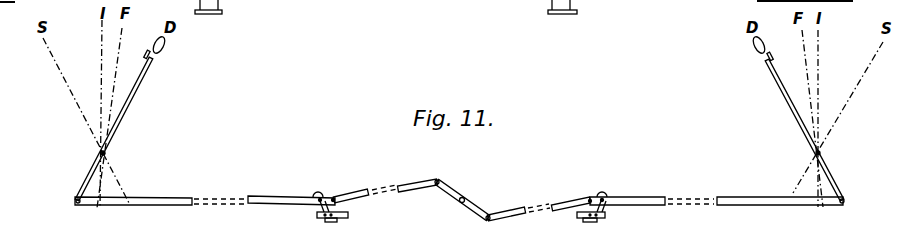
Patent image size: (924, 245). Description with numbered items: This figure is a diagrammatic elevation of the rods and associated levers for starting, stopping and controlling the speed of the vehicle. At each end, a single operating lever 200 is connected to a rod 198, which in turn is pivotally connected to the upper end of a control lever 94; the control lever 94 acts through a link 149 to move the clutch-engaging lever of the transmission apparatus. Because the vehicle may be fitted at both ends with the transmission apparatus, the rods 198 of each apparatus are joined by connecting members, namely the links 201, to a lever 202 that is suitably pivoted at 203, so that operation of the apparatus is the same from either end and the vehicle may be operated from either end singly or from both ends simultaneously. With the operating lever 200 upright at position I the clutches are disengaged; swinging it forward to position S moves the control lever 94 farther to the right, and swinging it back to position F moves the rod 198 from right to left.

The rod 198 is at (170, 188).
The operating lever 200 is at (786, 97).
The control lever 94 is at (319, 192).
The link 149 is at (350, 215).
The link 201 is at (410, 186).
The lever 202 is at (478, 208).
The pivot 203 is at (456, 205).